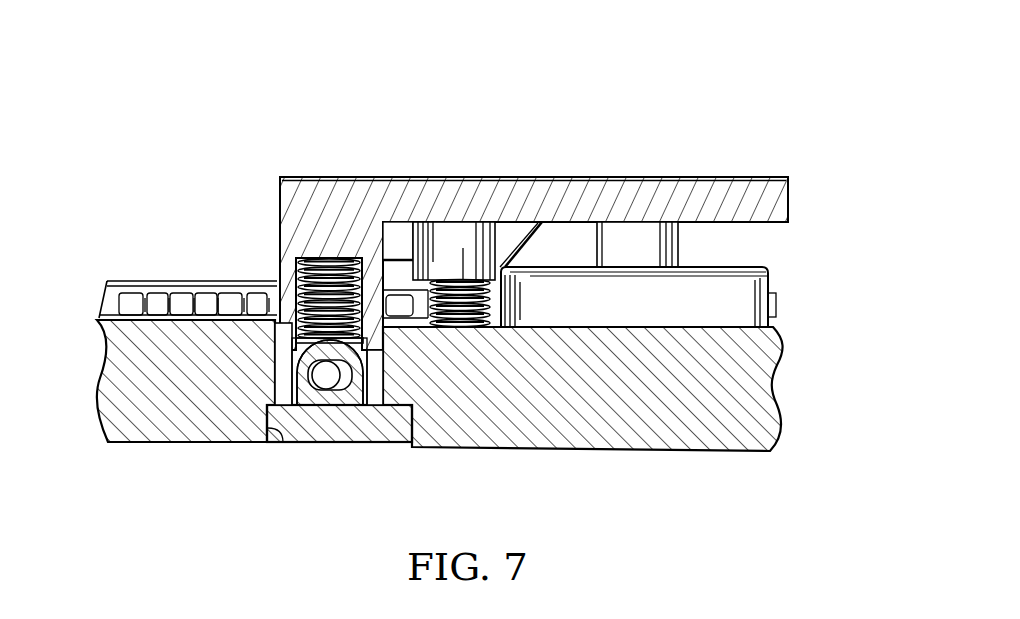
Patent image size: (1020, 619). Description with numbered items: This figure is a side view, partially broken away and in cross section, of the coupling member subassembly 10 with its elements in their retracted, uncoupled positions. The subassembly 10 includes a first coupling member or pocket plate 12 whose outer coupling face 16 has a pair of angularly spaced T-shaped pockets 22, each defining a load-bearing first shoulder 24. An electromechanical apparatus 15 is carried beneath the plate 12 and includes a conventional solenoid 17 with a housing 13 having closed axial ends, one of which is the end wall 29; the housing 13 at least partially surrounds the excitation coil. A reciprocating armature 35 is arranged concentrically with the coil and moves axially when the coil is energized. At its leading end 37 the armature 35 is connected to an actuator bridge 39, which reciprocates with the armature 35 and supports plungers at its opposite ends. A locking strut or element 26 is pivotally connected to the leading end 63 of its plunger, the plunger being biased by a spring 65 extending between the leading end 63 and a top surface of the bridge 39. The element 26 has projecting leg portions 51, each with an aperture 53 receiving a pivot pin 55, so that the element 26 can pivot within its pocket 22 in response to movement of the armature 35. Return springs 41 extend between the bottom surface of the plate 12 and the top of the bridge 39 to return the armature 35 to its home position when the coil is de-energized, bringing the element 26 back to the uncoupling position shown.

The coupling member subassembly 10 is at (593, 67).
The first coupling member or pocket plate 12 is at (140, 447).
The housing 13 is at (776, 261).
The electromechanical apparatus 15 is at (776, 172).
The coupling face 16 is at (700, 450).
The solenoid 17 is at (646, 140).
The T-shaped recess or pocket 22 is at (292, 394).
The load-bearing first shoulder 24 is at (416, 428).
The locking strut or element 26 is at (348, 452).
The end wall 29 is at (723, 266).
The reciprocating armature 35 is at (631, 170).
The leading end of the armature 37 is at (645, 243).
The actuator bridge 39 is at (373, 168).
The return spring 41 is at (490, 306).
The projecting leg portion 51 is at (310, 377).
The aperture 53 is at (349, 390).
The pivot pin 55 is at (327, 376).
The leading end of the plunger 63 is at (298, 346).
The spring 65 is at (302, 292).